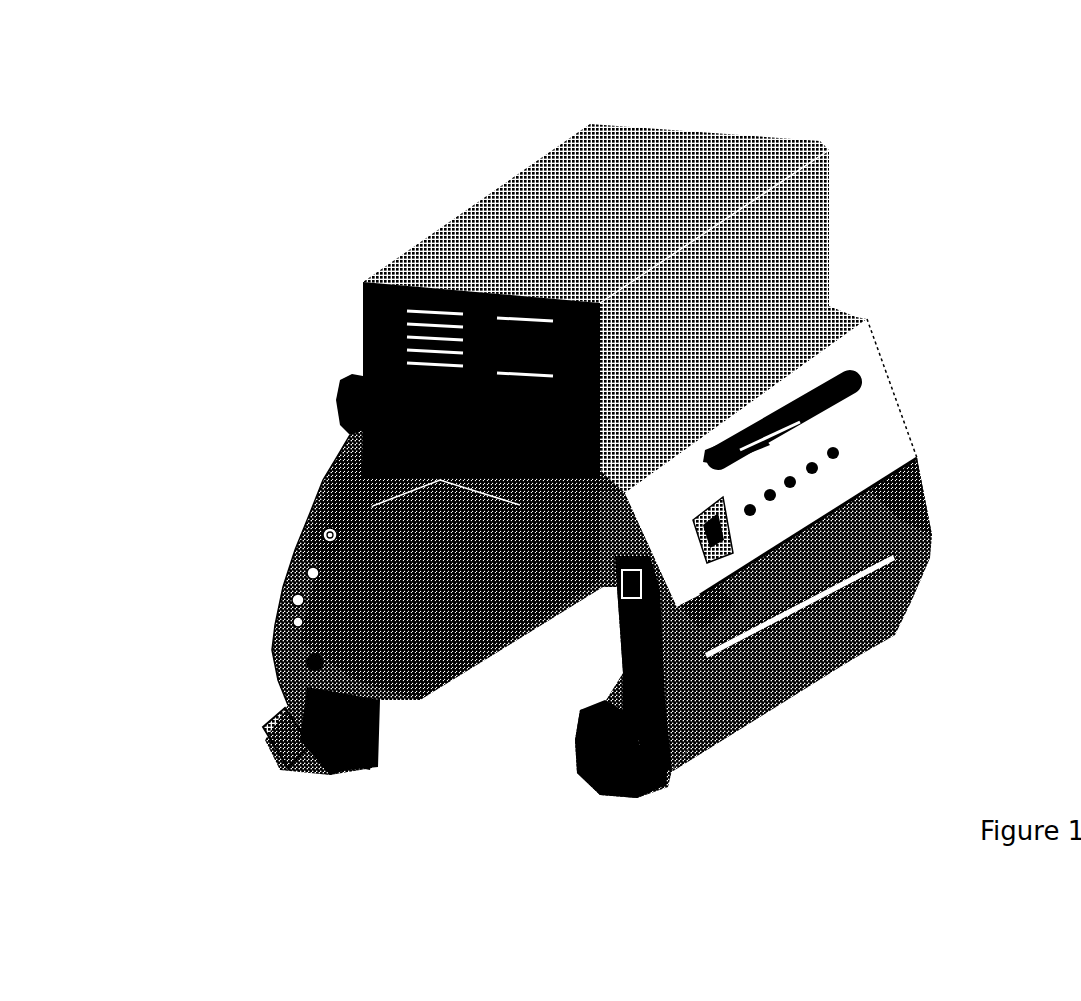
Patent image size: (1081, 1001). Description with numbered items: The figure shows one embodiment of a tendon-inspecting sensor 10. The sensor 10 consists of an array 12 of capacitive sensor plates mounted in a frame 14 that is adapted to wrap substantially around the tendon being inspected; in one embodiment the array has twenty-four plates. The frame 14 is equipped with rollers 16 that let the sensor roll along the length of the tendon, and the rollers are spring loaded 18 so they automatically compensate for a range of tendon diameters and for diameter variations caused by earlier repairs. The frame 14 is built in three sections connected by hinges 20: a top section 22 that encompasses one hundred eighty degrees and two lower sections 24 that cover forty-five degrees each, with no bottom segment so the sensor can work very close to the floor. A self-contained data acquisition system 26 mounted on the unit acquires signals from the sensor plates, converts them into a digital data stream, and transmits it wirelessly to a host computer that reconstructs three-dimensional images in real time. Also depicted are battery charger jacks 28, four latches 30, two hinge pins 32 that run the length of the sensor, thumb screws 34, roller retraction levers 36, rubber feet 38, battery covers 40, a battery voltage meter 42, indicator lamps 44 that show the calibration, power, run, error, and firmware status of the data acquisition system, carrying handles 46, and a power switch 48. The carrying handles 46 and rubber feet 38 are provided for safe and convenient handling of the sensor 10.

The sensor 10 is at (293, 343).
The array of capacitive sensor plates 12 is at (450, 572).
The frame 14 is at (320, 507).
The rollers 16 is at (608, 757).
The spring loading 18 is at (667, 757).
The hinges 20 is at (283, 638).
The top section 22 is at (363, 487).
The lower sections 24 is at (600, 708).
The data acquisition system 26 is at (770, 157).
The battery charger jacks 28 is at (313, 533).
The latches 30 is at (275, 590).
The hinge pins 32 is at (887, 493).
The thumb screws 34 is at (305, 660).
The roller retraction levers 36 is at (270, 747).
The rubber feet 38 is at (372, 768).
The battery covers 40 is at (853, 633).
The battery voltage meter 42 is at (743, 537).
The indicator lamps 44 is at (847, 447).
The carrying handles 46 is at (850, 371).
The power switch 48 is at (687, 617).